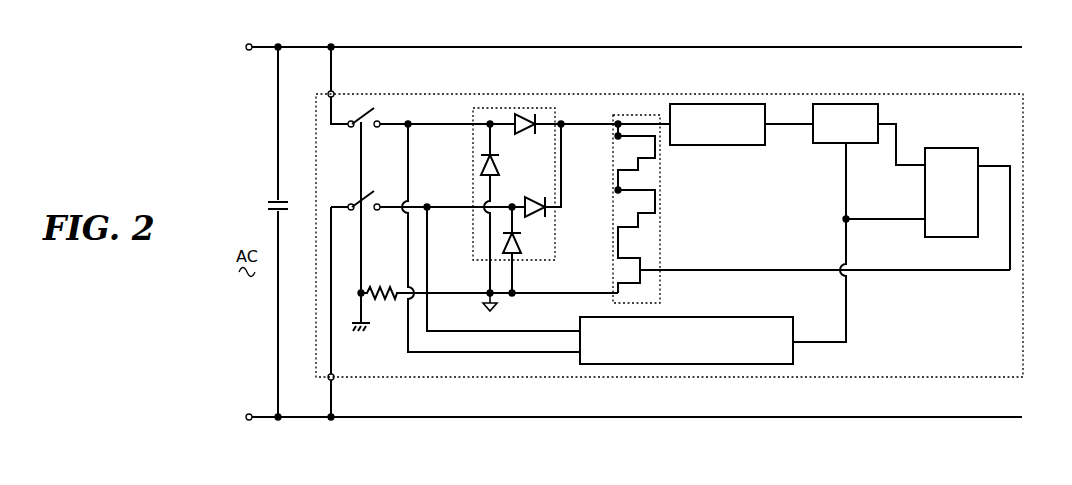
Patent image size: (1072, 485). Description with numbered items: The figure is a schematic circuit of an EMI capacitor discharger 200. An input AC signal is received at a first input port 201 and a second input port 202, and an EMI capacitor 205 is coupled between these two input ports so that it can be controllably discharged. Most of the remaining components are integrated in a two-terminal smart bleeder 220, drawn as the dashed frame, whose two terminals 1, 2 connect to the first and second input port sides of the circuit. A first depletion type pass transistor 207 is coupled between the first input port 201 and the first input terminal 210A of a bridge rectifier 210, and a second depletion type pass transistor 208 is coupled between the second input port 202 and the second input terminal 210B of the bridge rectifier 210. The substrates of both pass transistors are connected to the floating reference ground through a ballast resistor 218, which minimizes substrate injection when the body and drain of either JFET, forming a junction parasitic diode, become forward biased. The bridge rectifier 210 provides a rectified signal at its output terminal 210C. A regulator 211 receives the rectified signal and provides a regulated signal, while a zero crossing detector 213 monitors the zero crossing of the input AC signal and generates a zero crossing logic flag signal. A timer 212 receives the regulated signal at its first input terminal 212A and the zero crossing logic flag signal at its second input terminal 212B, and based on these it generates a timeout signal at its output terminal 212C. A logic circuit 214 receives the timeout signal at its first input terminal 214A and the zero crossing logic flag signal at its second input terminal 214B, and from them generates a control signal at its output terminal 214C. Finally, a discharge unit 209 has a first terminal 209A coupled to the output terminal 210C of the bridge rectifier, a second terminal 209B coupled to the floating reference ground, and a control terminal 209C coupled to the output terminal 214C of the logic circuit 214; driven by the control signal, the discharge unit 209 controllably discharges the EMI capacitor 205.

The EMI capacitor discharger 200 is at (245, 43).
The first input port 201 is at (248, 53).
The second input port 202 is at (248, 410).
The EMI capacitor 205 is at (270, 201).
The first terminal 1 is at (334, 93).
The second terminal 2 is at (333, 380).
The first depletion type pass transistor 207 is at (367, 128).
The second depletion type pass transistor 208 is at (367, 211).
The discharge unit 209 is at (662, 216).
The first terminal of discharge unit 209A is at (613, 127).
The second terminal of discharge unit 209B is at (554, 282).
The control terminal of discharge unit 209C is at (825, 280).
The bridge rectifier 210 is at (487, 259).
The first input terminal of bridge rectifier 210A is at (472, 129).
The second input terminal of bridge rectifier 210B is at (471, 212).
The output terminal of bridge rectifier 210C is at (588, 115).
The regulator 211 is at (727, 149).
The timer 212 is at (848, 146).
The first input terminal of timer 212A is at (789, 113).
The second input terminal of timer 212B is at (821, 242).
The output terminal of timer 212C is at (901, 134).
The zero crossing detector 213 is at (738, 318).
The logic circuit 214 is at (953, 148).
The first input terminal of logic circuit 214A is at (902, 176).
The second input terminal of logic circuit 214B is at (885, 229).
The output terminal of logic circuit 214C is at (1000, 207).
The ballast resistor 218 is at (421, 226).
The two-terminal smart bleeder 220 is at (531, 92).